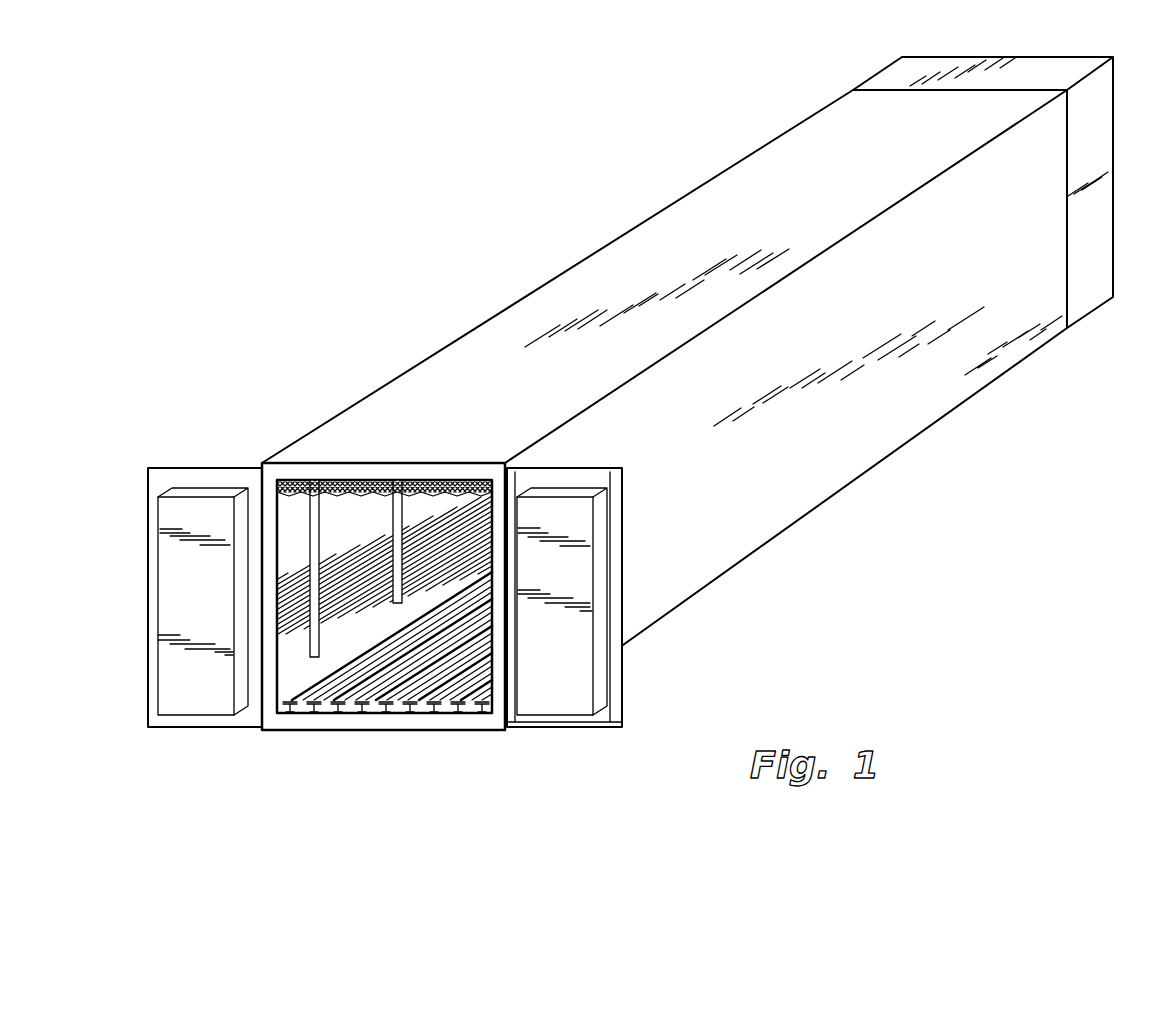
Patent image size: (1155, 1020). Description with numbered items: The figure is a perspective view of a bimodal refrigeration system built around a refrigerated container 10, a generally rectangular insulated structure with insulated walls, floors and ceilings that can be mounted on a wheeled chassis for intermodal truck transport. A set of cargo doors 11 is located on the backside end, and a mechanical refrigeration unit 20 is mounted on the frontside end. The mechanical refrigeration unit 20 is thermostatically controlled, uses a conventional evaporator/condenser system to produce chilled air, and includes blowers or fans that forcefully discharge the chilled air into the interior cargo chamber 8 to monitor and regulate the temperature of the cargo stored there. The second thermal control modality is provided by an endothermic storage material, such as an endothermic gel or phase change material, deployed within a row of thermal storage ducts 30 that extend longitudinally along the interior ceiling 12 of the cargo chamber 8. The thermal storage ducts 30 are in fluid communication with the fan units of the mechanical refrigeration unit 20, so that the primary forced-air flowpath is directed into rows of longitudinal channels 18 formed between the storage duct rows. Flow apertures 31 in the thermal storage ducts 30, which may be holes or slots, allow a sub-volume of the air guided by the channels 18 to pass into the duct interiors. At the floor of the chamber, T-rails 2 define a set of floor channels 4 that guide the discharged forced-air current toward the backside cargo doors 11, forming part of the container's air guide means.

The refrigerated container 10 is at (528, 250).
The mechanical refrigeration unit 20 is at (1100, 237).
The cargo doors 11 is at (179, 727).
The interior ceiling 12 is at (385, 486).
The thermal storage ducts 30 is at (357, 487).
The flow apertures 31 is at (452, 497).
The longitudinal channels 18 is at (333, 498).
The interior cargo chamber 8 is at (334, 648).
The floor channels 4 is at (423, 713).
The T-rails 2 is at (450, 713).